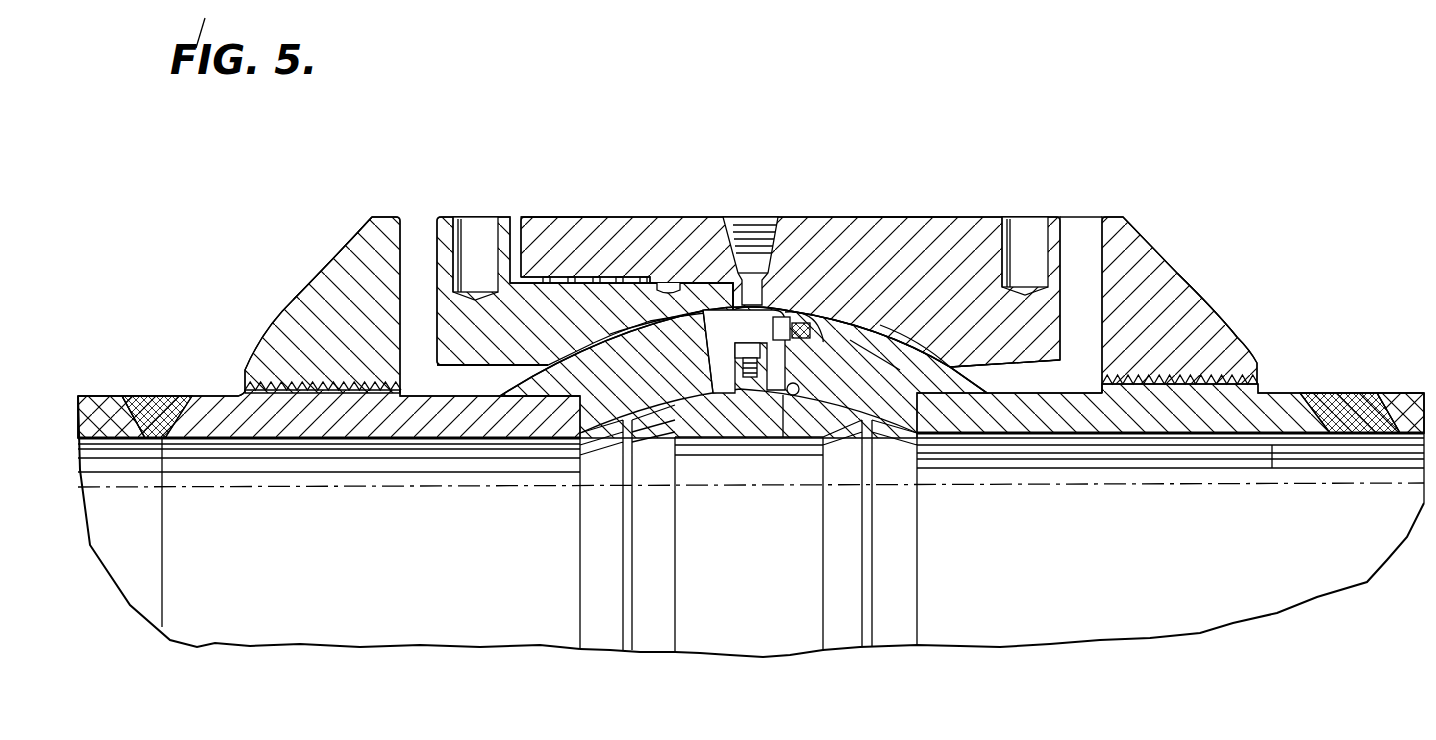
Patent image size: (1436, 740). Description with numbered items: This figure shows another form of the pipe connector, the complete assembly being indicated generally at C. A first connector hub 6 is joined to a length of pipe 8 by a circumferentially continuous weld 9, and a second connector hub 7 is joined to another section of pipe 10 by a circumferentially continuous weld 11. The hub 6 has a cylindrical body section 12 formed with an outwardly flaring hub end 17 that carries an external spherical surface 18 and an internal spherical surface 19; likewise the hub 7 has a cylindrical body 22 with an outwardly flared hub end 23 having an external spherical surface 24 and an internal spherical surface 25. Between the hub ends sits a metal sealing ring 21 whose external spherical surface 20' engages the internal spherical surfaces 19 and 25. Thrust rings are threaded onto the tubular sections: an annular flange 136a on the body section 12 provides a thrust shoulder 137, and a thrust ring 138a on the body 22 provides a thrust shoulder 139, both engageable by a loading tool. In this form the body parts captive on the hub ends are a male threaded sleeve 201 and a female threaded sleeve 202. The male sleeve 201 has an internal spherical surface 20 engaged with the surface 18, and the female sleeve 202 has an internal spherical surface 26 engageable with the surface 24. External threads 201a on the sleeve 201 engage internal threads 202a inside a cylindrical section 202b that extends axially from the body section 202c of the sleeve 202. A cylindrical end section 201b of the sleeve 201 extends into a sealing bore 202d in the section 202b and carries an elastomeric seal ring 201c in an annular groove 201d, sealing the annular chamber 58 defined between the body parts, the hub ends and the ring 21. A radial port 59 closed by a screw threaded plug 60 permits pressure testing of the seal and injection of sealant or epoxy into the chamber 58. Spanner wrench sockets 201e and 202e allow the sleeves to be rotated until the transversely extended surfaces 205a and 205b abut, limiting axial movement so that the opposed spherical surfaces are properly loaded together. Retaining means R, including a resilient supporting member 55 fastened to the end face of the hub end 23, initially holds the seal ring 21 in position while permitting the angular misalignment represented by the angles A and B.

The connector hub 6 is at (343, 432).
The connector hub 7 is at (1162, 430).
The pipe 8 is at (95, 410).
The weld 9 is at (157, 410).
The pipe 10 is at (1393, 395).
The weld 11 is at (1330, 398).
The cylindrical body section 12 is at (238, 430).
The hub end 17 is at (565, 440).
The external spherical surface 18 is at (598, 335).
The internal spherical surface 19 is at (655, 440).
The internal spherical surface 20 is at (492, 338).
The external spherical surface 20' is at (769, 445).
The metal sealing ring 21 is at (740, 440).
The cylindrical body 22 is at (1272, 430).
The hub end 23 is at (882, 369).
The external spherical surface 24 is at (932, 337).
The internal spherical surface 25 is at (802, 400).
The internal spherical surface 26 is at (892, 332).
The resilient supporting member 55 is at (812, 335).
The annular space 58 is at (685, 370).
The radial port 59 is at (746, 285).
The screw threaded plug 60 is at (770, 240).
The annular flange 136a is at (300, 313).
The abutment surface 137 is at (318, 266).
The thrust ring 138a is at (1195, 313).
The thrust surface 139 is at (1188, 270).
The male threaded sleeve 201 is at (437, 220).
The external threads 201a is at (560, 280).
The cylindrical end section 201b is at (690, 330).
The elastomeric seal ring 201c is at (712, 300).
The annular groove 201d is at (620, 297).
The spanner wrench receiving socket 201e is at (466, 220).
The female threaded sleeve 202 is at (970, 219).
The internal threads 202a is at (597, 276).
The cylindrical section 202b is at (535, 217).
The body section 202c is at (905, 217).
The sealing bore 202d is at (668, 284).
The spanner wrench receiving socket 202e is at (1033, 226).
The transversely extended surface 205a is at (760, 295).
The transversely extended surface 205b is at (790, 310).
The angle A is at (465, 391).
The angle B is at (1040, 390).
The assembly C is at (1130, 178).
The retaining means R is at (745, 320).